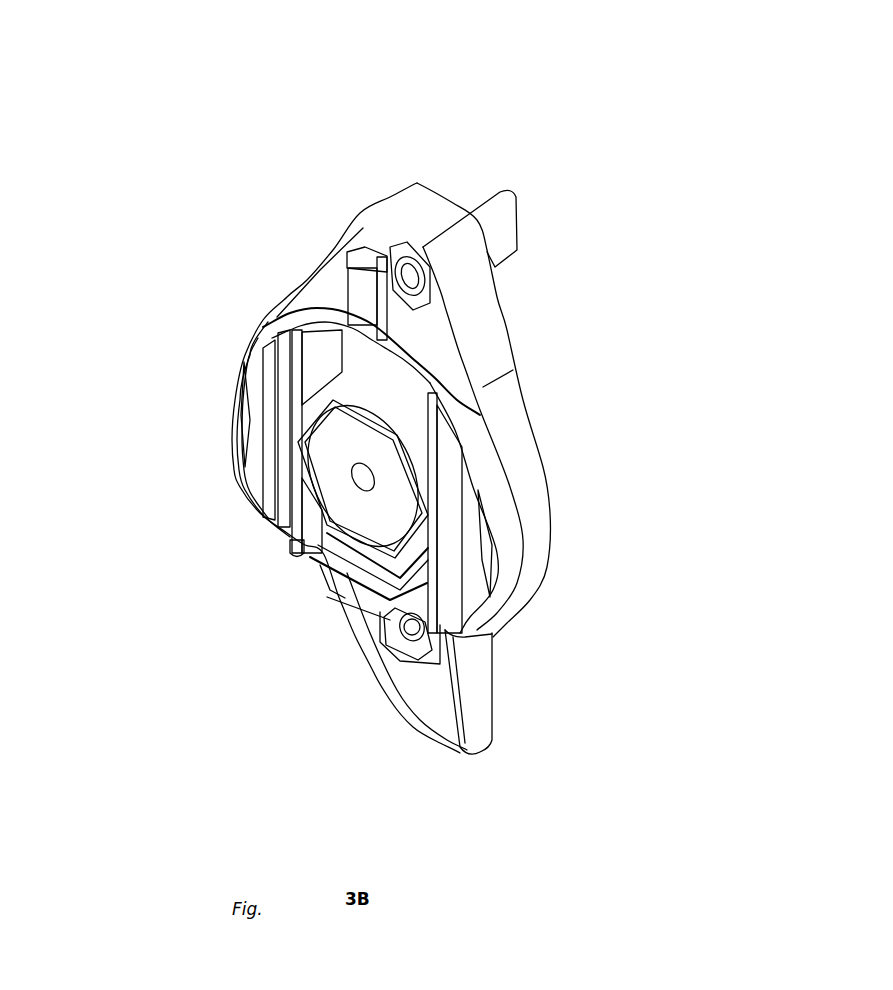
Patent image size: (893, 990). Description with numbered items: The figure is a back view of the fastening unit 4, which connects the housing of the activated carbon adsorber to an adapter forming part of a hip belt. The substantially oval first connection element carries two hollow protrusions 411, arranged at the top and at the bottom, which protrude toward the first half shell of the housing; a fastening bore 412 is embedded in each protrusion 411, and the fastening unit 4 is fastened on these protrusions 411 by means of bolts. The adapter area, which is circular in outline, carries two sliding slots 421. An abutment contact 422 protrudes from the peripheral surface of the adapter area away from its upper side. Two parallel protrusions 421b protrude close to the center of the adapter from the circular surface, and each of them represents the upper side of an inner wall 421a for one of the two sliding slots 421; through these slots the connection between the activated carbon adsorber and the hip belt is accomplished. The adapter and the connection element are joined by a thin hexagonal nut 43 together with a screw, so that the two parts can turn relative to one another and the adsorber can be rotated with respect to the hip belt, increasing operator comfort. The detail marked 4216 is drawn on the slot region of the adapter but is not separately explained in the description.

The fastening unit 4 is at (535, 100).
The hollow protrusion 411 is at (436, 225).
The fastening bore 412 is at (338, 308).
The abutment contact 422 is at (357, 272).
The sliding slot 421 is at (298, 434).
The hexagonal nut 43 is at (392, 495).
The tab 4216 is at (288, 540).
The inner wall 421a is at (310, 562).
The parallel protrusion 421b is at (408, 628).